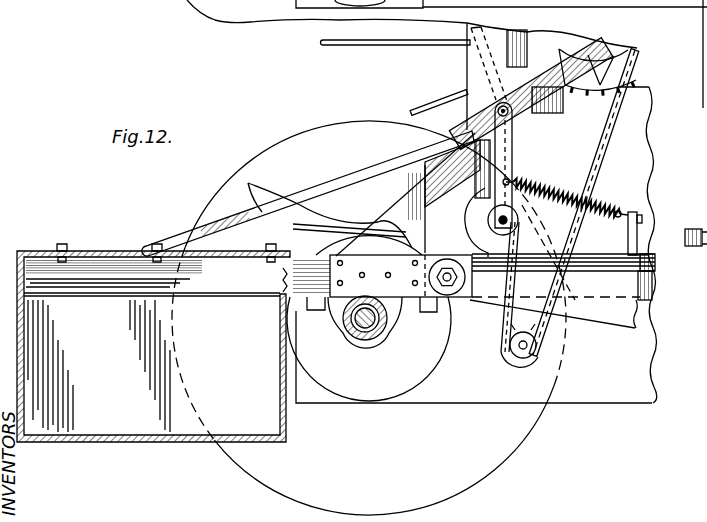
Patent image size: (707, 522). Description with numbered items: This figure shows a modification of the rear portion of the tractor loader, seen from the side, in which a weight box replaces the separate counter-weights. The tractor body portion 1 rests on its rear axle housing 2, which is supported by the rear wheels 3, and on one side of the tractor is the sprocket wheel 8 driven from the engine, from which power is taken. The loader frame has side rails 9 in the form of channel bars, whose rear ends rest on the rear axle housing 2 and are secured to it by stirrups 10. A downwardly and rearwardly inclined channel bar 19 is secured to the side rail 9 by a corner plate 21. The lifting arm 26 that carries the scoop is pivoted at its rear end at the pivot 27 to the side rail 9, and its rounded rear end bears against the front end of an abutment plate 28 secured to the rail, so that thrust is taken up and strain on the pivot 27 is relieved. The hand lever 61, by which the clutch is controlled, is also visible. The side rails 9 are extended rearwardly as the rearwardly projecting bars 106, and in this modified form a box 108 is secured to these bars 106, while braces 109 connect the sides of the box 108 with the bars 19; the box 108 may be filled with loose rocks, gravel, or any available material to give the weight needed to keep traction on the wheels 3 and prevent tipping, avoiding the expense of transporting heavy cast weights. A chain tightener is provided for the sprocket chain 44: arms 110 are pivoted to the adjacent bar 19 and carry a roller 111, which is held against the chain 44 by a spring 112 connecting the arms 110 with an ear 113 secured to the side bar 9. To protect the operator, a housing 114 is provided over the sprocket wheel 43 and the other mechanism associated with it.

The body portion 1 is at (602, 395).
The rear axle housing 2 is at (338, 342).
The rear wheels 3 is at (500, 452).
The sprocket wheel 8 is at (514, 352).
The side rails 9 is at (648, 262).
The stirrups 10 is at (374, 340).
The channel bar 19 is at (455, 190).
The corner plate 21 is at (395, 203).
The lifting arm 26 is at (623, 318).
The pivot 27 is at (446, 284).
The abutment plates 28 is at (345, 258).
The sprocket wheel 43 is at (622, 57).
The sprocket chain 44 is at (603, 153).
The hand lever 61 is at (338, 44).
The rearwardly projecting bars 106 is at (78, 270).
The box 108 is at (282, 422).
The braces 109 is at (334, 176).
The arms 110 is at (512, 143).
The roller 111 is at (523, 224).
The spring 112 is at (571, 198).
The ear 113 is at (630, 239).
The housing 114 is at (472, 57).